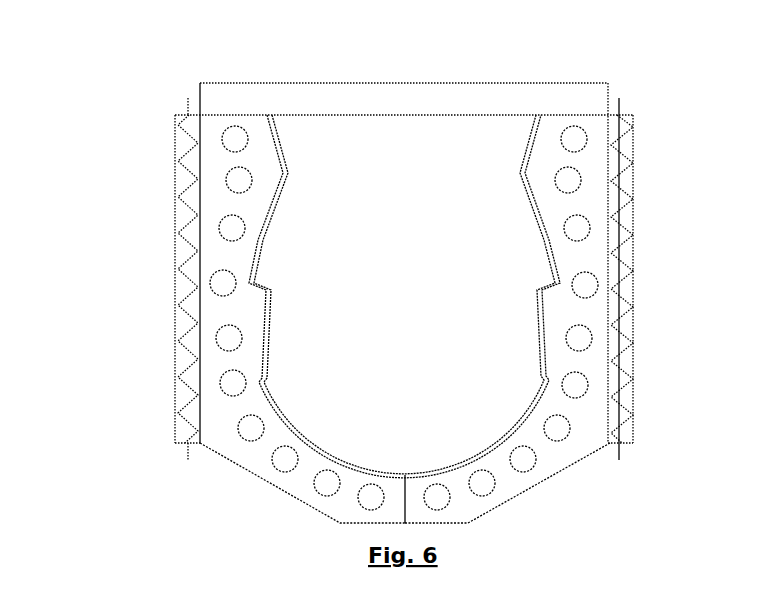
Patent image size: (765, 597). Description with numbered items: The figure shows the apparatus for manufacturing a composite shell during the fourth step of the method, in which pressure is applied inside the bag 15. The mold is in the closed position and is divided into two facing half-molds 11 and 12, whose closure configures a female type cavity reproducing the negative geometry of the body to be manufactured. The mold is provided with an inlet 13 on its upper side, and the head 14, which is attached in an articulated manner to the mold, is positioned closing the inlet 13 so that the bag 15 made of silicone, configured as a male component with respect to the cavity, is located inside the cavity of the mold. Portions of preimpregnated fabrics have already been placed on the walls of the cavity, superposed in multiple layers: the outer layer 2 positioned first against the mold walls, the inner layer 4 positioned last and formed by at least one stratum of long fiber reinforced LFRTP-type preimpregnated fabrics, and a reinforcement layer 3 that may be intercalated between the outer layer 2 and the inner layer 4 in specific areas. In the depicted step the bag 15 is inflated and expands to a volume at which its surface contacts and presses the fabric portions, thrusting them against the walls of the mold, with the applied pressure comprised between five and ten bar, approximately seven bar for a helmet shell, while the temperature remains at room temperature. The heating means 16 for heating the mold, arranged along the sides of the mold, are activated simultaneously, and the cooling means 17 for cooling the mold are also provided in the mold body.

The outer layer 2 is at (296, 296).
The reinforcement layer 3 is at (296, 296).
The inner layer 4 is at (296, 296).
The half-mold 11 is at (267, 450).
The half-mold 12 is at (532, 437).
The inlet 13 is at (375, 115).
The head 14 is at (483, 72).
The bag 15 is at (404, 294).
The heating means 16 is at (177, 194).
The cooling means 17 is at (585, 338).